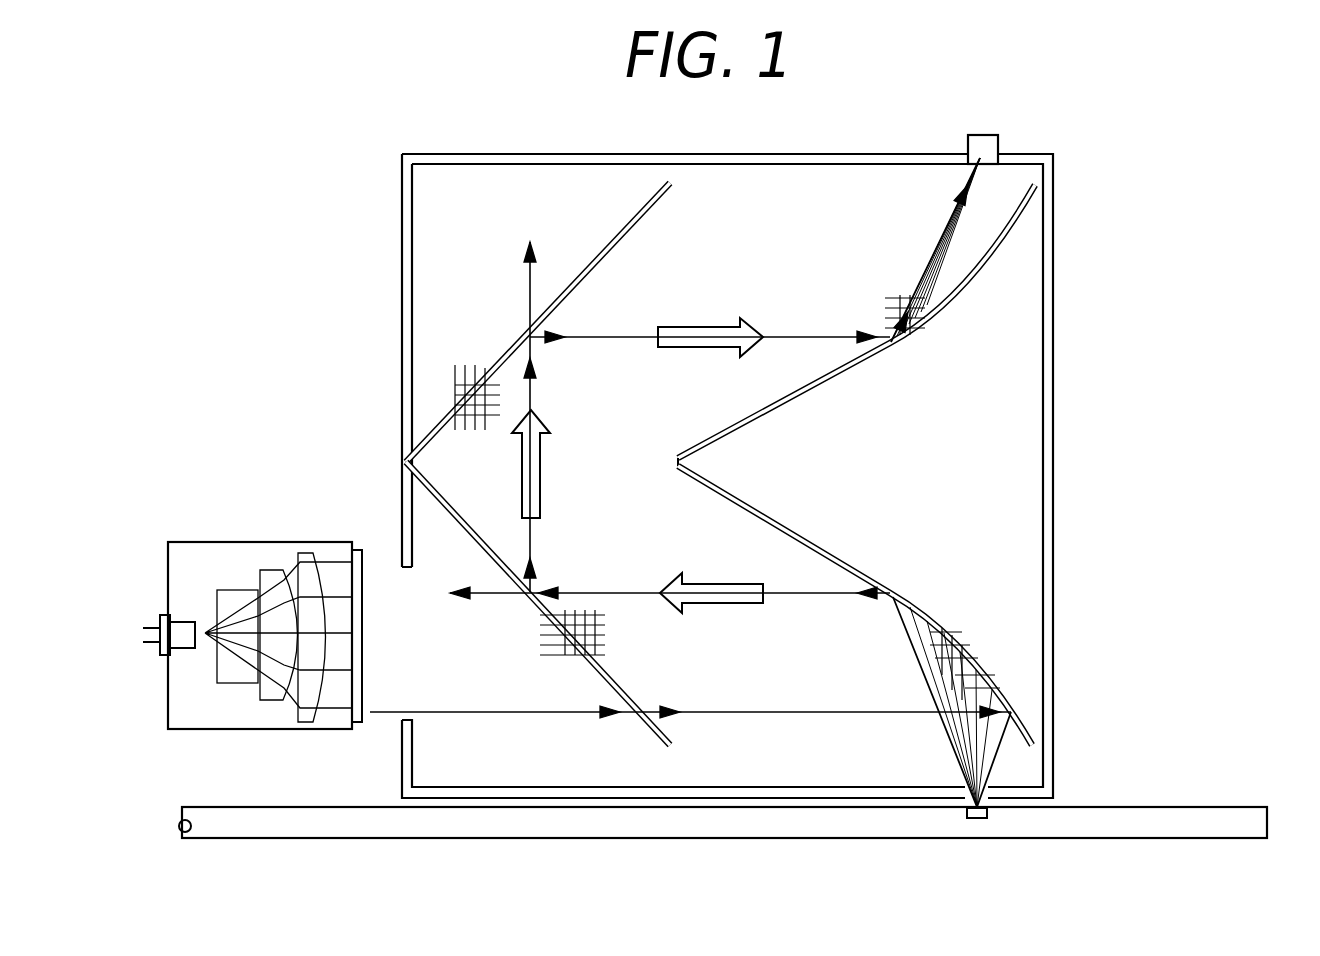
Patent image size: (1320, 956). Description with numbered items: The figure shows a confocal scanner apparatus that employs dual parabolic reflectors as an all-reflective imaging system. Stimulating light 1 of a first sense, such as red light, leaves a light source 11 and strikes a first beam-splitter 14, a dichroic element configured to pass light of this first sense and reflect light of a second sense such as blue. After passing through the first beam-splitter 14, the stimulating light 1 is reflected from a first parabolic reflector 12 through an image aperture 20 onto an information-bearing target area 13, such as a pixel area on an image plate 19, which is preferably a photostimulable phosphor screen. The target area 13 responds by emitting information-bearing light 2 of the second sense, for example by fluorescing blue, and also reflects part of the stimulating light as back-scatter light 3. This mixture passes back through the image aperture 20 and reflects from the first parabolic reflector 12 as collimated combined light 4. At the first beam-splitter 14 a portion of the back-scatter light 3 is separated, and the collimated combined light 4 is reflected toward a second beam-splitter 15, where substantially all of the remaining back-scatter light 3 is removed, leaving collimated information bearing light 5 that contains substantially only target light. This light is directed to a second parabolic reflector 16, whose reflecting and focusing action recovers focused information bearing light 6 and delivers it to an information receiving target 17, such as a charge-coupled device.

The stimulating light 1 is at (728, 713).
The information-bearing light 2 is at (960, 770).
The back-scatter light 3 is at (530, 280).
The collimated combined light 4 is at (540, 476).
The collimated information bearing light 5 is at (715, 328).
The focused information bearing light 6 is at (933, 223).
The light source 11 is at (262, 542).
The first parabolic reflector 12 is at (858, 547).
The information-bearing target area 13 is at (977, 818).
The first beam-splitter 14 is at (618, 682).
The second beam-splitter 15 is at (644, 221).
The second parabolic reflector 16 is at (898, 346).
The information receiving target 17 is at (986, 137).
The image plate 19 is at (715, 846).
The image aperture 20 is at (1022, 773).